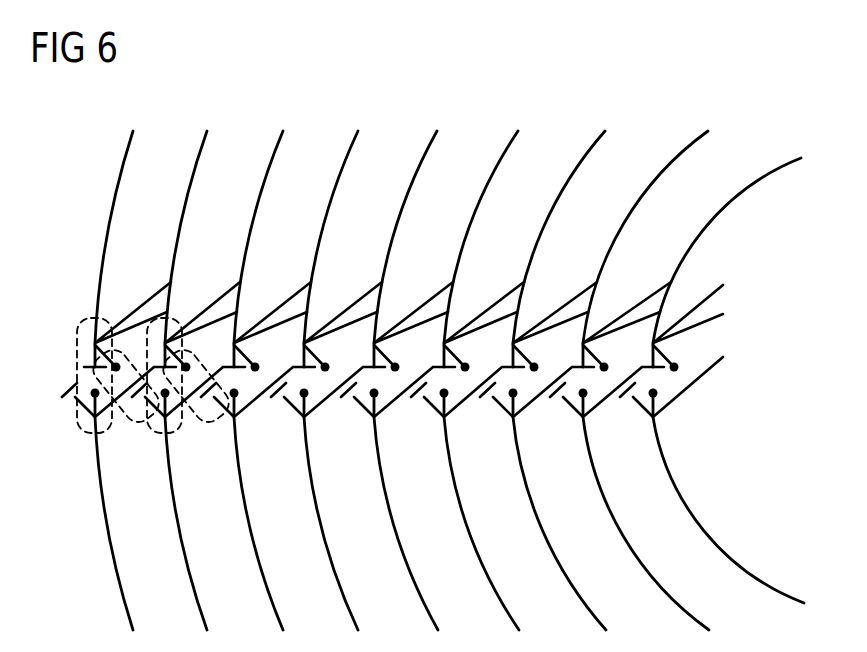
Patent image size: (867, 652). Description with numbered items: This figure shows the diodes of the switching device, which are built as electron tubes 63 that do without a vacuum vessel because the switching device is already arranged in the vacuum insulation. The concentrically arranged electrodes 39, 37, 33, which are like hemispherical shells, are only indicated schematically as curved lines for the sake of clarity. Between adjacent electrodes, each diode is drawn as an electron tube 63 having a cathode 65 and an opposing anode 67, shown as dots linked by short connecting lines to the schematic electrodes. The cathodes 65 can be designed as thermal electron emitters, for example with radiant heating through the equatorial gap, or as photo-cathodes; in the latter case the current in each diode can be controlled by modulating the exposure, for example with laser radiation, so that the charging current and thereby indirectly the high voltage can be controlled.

The electrode 33 is at (418, 170).
The electrode 37 is at (691, 247).
The electrode 39 is at (113, 205).
The electron tube 63 is at (137, 437).
The cathode 65 is at (84, 393).
The anode 67 is at (84, 362).